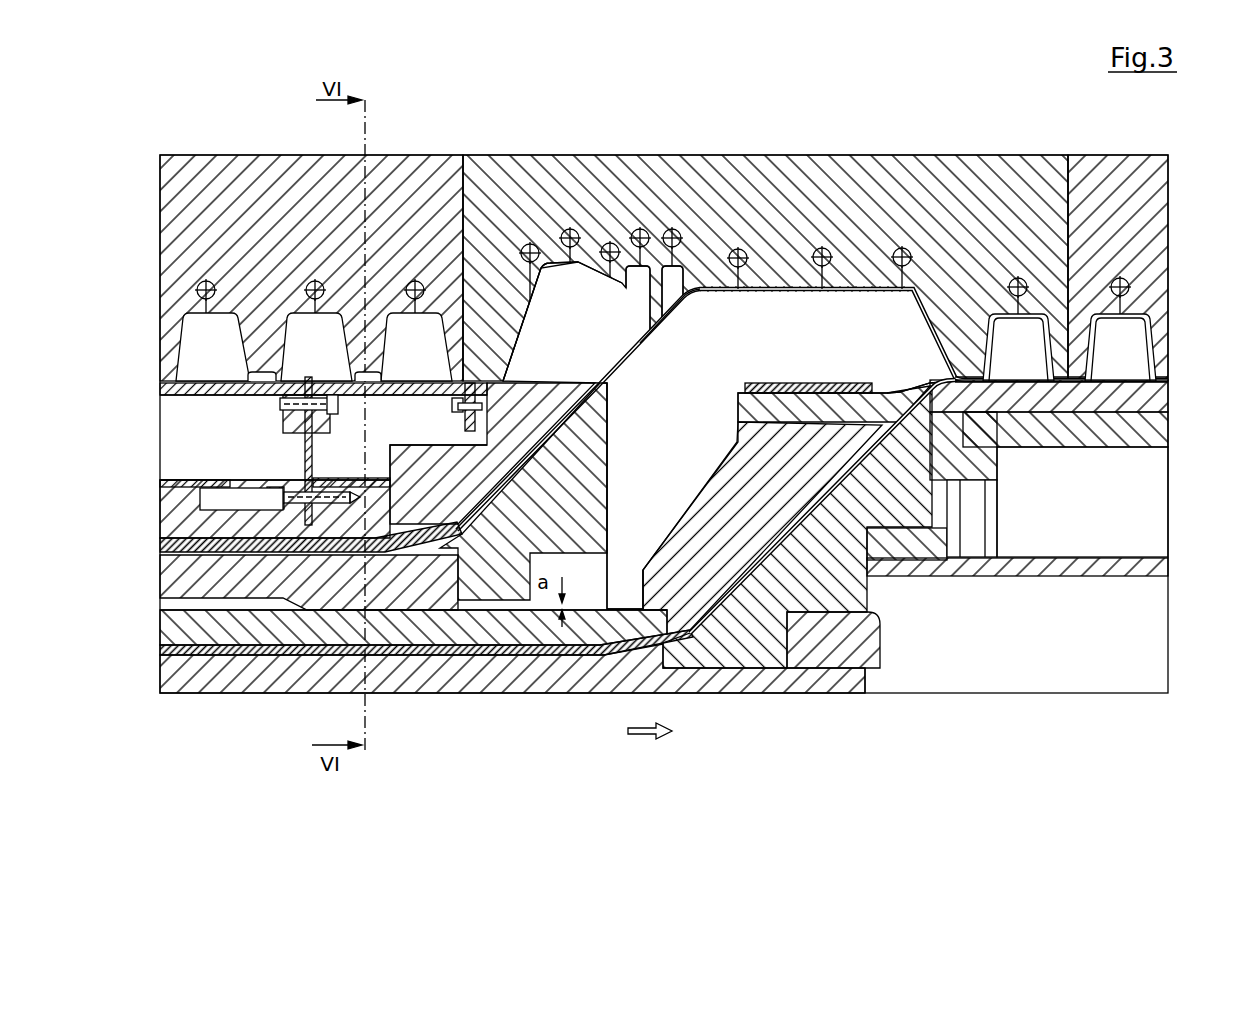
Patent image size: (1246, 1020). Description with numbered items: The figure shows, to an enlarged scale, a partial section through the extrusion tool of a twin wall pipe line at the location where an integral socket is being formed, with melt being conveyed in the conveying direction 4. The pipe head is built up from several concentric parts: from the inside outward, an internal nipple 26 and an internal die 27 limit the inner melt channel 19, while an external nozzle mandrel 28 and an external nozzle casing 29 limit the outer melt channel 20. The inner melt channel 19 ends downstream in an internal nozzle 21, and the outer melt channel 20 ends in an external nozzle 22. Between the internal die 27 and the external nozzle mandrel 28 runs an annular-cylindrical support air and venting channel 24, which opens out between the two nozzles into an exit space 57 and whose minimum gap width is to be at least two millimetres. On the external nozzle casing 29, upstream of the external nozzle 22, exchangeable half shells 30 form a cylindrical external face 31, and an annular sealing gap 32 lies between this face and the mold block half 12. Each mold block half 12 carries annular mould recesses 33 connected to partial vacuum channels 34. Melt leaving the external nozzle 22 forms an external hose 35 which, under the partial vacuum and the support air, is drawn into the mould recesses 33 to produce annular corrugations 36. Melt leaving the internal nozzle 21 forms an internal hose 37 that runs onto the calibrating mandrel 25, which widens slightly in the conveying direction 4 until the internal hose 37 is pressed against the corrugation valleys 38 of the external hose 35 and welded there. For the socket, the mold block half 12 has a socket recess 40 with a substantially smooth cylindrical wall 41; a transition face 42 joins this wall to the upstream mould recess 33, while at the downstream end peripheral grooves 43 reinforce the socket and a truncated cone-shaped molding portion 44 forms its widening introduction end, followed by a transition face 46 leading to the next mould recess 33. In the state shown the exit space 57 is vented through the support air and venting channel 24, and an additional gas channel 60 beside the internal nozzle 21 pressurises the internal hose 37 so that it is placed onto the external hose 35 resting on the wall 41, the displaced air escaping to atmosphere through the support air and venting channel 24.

The conveying direction 4 is at (643, 741).
The mold block half 12 is at (760, 178).
The inner melt channel 19 is at (160, 651).
The outer melt channel 20 is at (160, 545).
The internal nozzle 21 is at (933, 374).
The external nozzle 22 is at (602, 381).
The support air and venting channel 24 is at (413, 605).
The calibrating mandrel 25 is at (1145, 421).
The internal nipple 26 is at (542, 675).
The internal die 27 is at (515, 625).
The external nozzle mandrel 28 is at (190, 578).
The external nozzle casing 29 is at (172, 513).
The half shells 30 is at (160, 389).
The cylindrical external face 31 is at (208, 378).
The annular sealing gap 32 is at (503, 380).
The mould recess 33 is at (300, 345).
The partial vacuum channel 34 is at (204, 281).
The external hose 35 is at (650, 338).
The annular corrugations 36 is at (1155, 322).
The internal hose 37 is at (933, 382).
The corrugation valleys 38 is at (1168, 379).
The socket recess 40 is at (836, 344).
The cylindrical wall 41 is at (838, 287).
The transition face 42 is at (940, 330).
The peripheral grooves 43 is at (683, 270).
The truncated cone-shaped molding portion 44 is at (597, 262).
The transition face 46 is at (506, 340).
The exit space 57 is at (657, 505).
The additional gas channel 60 is at (930, 527).